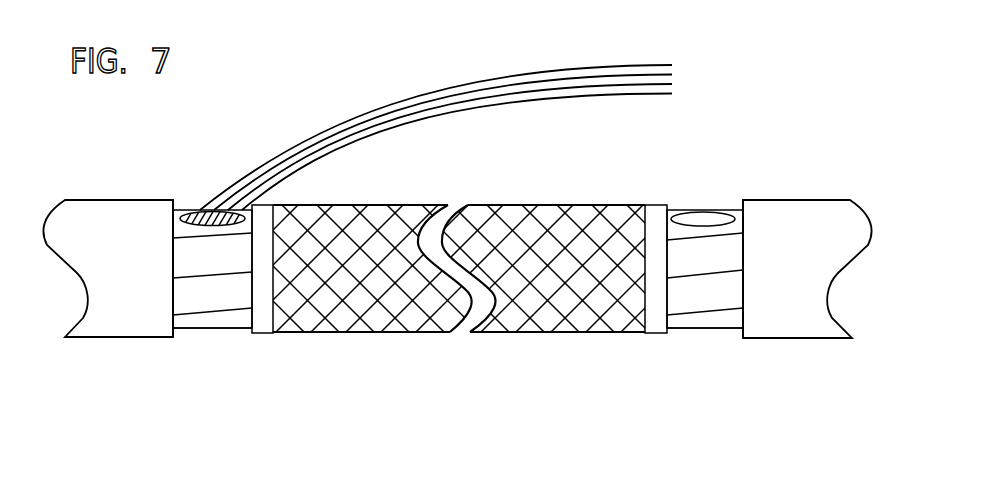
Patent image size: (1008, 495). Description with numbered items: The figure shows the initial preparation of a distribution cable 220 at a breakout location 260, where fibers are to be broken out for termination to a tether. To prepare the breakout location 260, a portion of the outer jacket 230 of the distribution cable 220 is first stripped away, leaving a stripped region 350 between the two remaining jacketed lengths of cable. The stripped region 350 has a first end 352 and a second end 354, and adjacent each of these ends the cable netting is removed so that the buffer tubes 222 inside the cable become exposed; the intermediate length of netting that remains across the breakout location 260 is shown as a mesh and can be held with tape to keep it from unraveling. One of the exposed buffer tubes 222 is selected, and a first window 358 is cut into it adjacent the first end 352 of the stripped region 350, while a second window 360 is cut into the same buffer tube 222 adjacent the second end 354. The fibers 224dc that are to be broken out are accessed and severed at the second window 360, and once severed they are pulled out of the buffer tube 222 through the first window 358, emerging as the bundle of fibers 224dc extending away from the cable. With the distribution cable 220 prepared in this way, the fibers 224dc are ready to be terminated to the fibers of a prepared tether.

The distribution cable 220 is at (102, 225).
The buffer tube 222 is at (182, 210).
The outer jacket 230 is at (140, 338).
The fibers 224dc is at (417, 97).
The breakout location 260 is at (703, 107).
The stripped region 350 is at (445, 323).
The first end 352 is at (173, 338).
The second end 354 is at (743, 335).
The first window 358 is at (236, 214).
The second window 360 is at (690, 212).